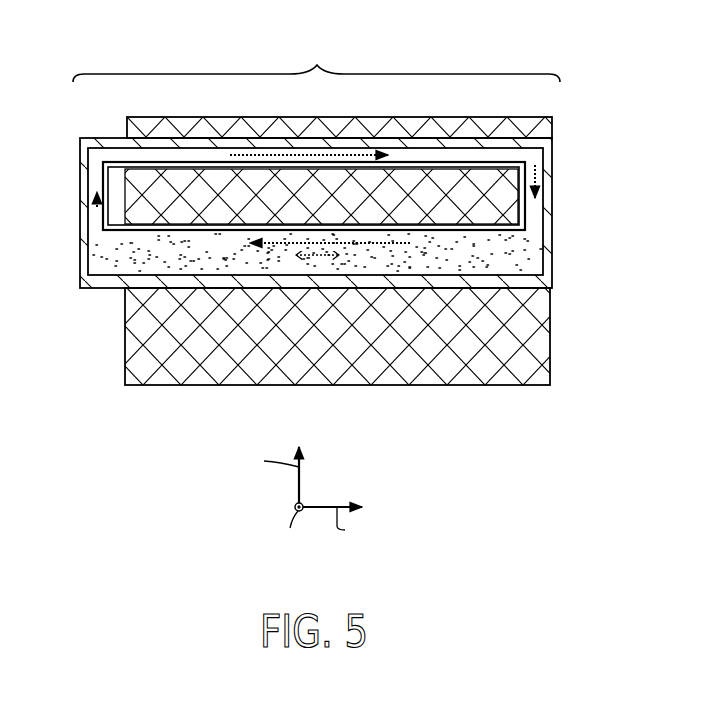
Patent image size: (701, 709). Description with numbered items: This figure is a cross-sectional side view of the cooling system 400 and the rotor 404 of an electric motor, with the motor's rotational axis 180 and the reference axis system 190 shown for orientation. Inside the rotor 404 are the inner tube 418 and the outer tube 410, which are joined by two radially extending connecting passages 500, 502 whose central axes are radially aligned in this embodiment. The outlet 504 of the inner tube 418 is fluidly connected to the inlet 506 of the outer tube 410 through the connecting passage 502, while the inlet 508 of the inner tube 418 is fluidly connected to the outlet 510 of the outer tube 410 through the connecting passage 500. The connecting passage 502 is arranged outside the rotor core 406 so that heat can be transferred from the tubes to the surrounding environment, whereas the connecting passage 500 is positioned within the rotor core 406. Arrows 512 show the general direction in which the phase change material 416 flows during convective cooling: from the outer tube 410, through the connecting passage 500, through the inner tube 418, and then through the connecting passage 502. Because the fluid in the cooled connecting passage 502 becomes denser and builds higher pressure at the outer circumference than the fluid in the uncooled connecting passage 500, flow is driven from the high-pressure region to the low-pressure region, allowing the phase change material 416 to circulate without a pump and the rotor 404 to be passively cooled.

The rotational axis 180 is at (318, 258).
The axis system 190 is at (340, 471).
The cooling system 400 is at (315, 190).
The rotor 404 is at (316, 62).
The rotor core 406 is at (331, 338).
The outer tube 410 is at (298, 131).
The phase change material 416 is at (205, 158).
The inner tube 418 is at (268, 297).
The connecting passage 500 is at (572, 193).
The connecting passage 502 is at (76, 196).
The outlet of the inner tube 504 is at (93, 235).
The inlet of the outer tube 506 is at (100, 151).
The inlet of the inner tube 508 is at (541, 228).
The outlet of the outer tube 510 is at (531, 156).
The arrows 512 is at (360, 150).